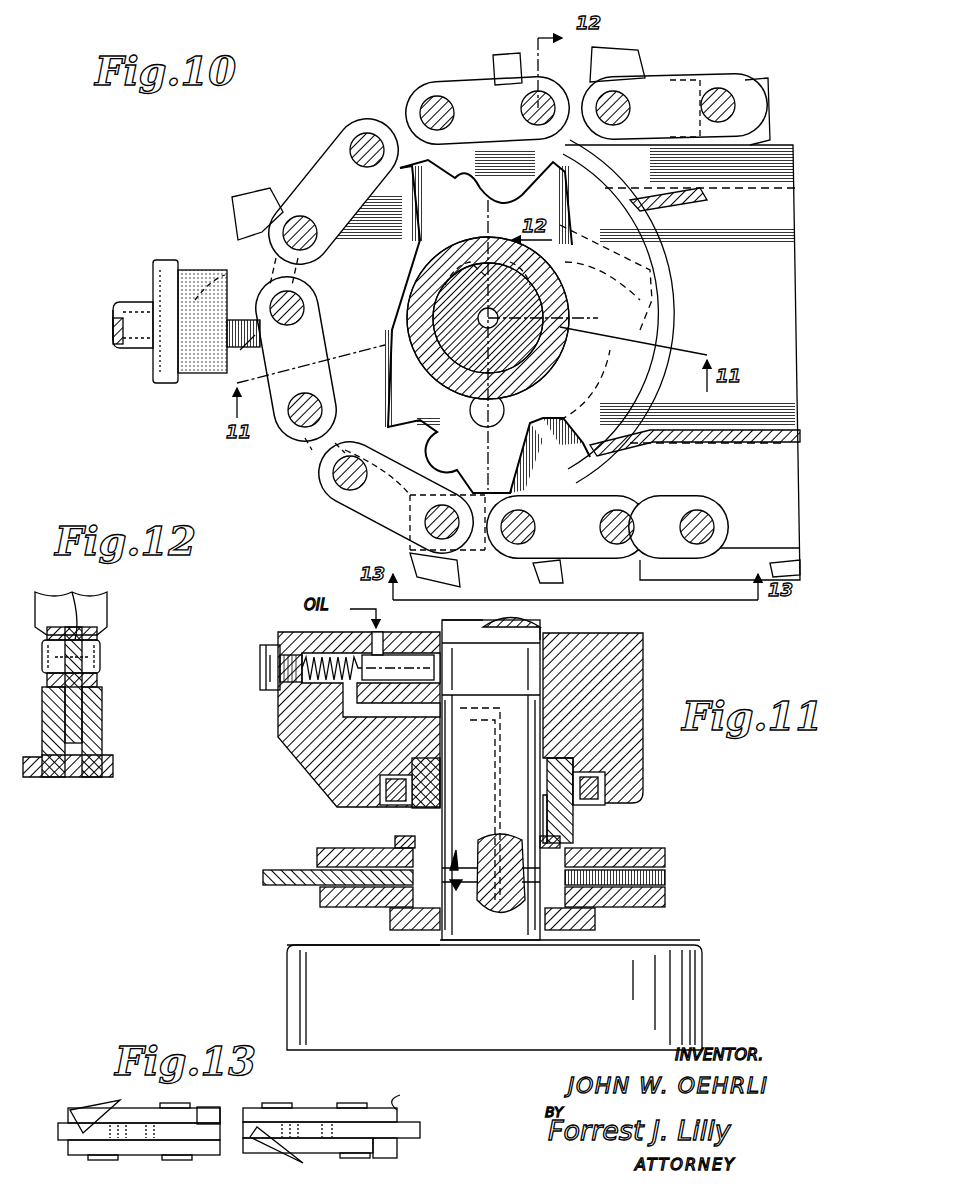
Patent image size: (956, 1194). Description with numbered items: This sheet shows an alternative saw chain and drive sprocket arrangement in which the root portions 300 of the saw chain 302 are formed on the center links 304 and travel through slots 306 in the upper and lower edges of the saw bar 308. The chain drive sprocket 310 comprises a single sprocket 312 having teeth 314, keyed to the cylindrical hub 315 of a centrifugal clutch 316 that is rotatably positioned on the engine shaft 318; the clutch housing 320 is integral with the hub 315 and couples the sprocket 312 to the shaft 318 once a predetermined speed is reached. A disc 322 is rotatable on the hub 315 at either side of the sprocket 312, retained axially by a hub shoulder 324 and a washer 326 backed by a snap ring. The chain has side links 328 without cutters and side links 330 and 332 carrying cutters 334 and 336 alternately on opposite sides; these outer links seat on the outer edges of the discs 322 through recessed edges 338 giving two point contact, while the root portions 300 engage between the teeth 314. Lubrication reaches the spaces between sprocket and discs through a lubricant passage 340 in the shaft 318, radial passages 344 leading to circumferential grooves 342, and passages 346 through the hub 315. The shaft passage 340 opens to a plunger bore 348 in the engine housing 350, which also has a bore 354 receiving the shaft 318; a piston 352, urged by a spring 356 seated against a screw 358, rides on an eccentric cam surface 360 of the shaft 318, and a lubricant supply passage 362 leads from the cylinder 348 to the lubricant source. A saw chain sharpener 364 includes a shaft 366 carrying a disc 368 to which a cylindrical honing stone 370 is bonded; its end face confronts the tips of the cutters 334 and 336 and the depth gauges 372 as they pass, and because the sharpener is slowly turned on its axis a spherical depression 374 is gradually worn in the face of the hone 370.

In FIG. 10, the root portions 300 is at (486, 326).
In FIG. 10, the saw chain 302 is at (468, 80).
In FIG. 13, the saw chain 302 is at (420, 1095).
In FIG. 10, the center links 304 is at (428, 97).
In FIG. 12, the center links 304 is at (71, 685).
In FIG. 13, the center links 304 is at (425, 1130).
In FIG. 10, the slots 306 is at (704, 196).
In FIG. 10, the saw bar 308 is at (563, 362).
In FIG. 10, the chain drive sprocket 310 is at (325, 455).
In FIG. 10, the sprocket 312 is at (390, 440).
In FIG. 11, the sprocket 312 is at (665, 878).
In FIG. 12, the sprocket 312 is at (95, 752).
In FIG. 10, the teeth 314 is at (423, 360).
In FIG. 10, the cylindrical hub 315 is at (562, 262).
In FIG. 11, the cylindrical hub 315 is at (575, 818).
In FIG. 11, the centrifugal clutch 316 is at (708, 1002).
In FIG. 10, the shaft 318 is at (545, 292).
In FIG. 11, the shaft 318 is at (540, 745).
In FIG. 11, the cylindrical housing 320 is at (700, 952).
In FIG. 10, the disc 322 is at (378, 520).
In FIG. 11, the disc 322 is at (320, 858).
In FIG. 12, the disc 322 is at (40, 712).
In FIG. 11, the hub shoulder 324 is at (392, 910).
In FIG. 11, the washer 326 is at (400, 842).
In FIG. 10, the side links 328 is at (395, 130).
In FIG. 13, the side links 328 is at (310, 1108).
In FIG. 10, the side links 330 is at (645, 75).
In FIG. 13, the side links 330 is at (170, 1108).
In FIG. 13, the side links 332 is at (340, 1153).
In FIG. 10, the cutters 334 is at (630, 45).
In FIG. 12, the cutters 334 is at (52, 600).
In FIG. 13, the cutters 334 is at (105, 1100).
In FIG. 12, the cutters 336 is at (100, 592).
In FIG. 13, the cutters 336 is at (265, 1160).
In FIG. 10, the recessed edges 338 is at (278, 272).
In FIG. 11, the lubricant passage 340 is at (480, 770).
In FIG. 10, the circumferential grooves 342 is at (455, 375).
In FIG. 11, the circumferential grooves 342 is at (452, 848).
In FIG. 11, the lubricant passages 344 is at (500, 880).
In FIG. 11, the lubricant passages 346 is at (520, 905).
In FIG. 11, the plunger bore 348 is at (325, 683).
In FIG. 11, the engine housing 350 is at (290, 760).
In FIG. 11, the piston 352 is at (420, 672).
In FIG. 11, the bore 354 is at (545, 643).
In FIG. 11, the spring 356 is at (320, 660).
In FIG. 11, the screw 358 is at (262, 672).
In FIG. 11, the cam surface 360 is at (560, 660).
In FIG. 11, the lubricant supply passage 362 is at (385, 635).
In FIG. 10, the saw chain sharpener 364 is at (118, 352).
In FIG. 10, the shaft 366 is at (122, 302).
In FIG. 10, the disc 368 is at (150, 270).
In FIG. 10, the honing stone 370 is at (185, 352).
In FIG. 10, the depth gauge 372 is at (520, 44).
In FIG. 13, the depth gauge 372 is at (222, 1108).
In FIG. 10, the spherical depression 374 is at (228, 345).